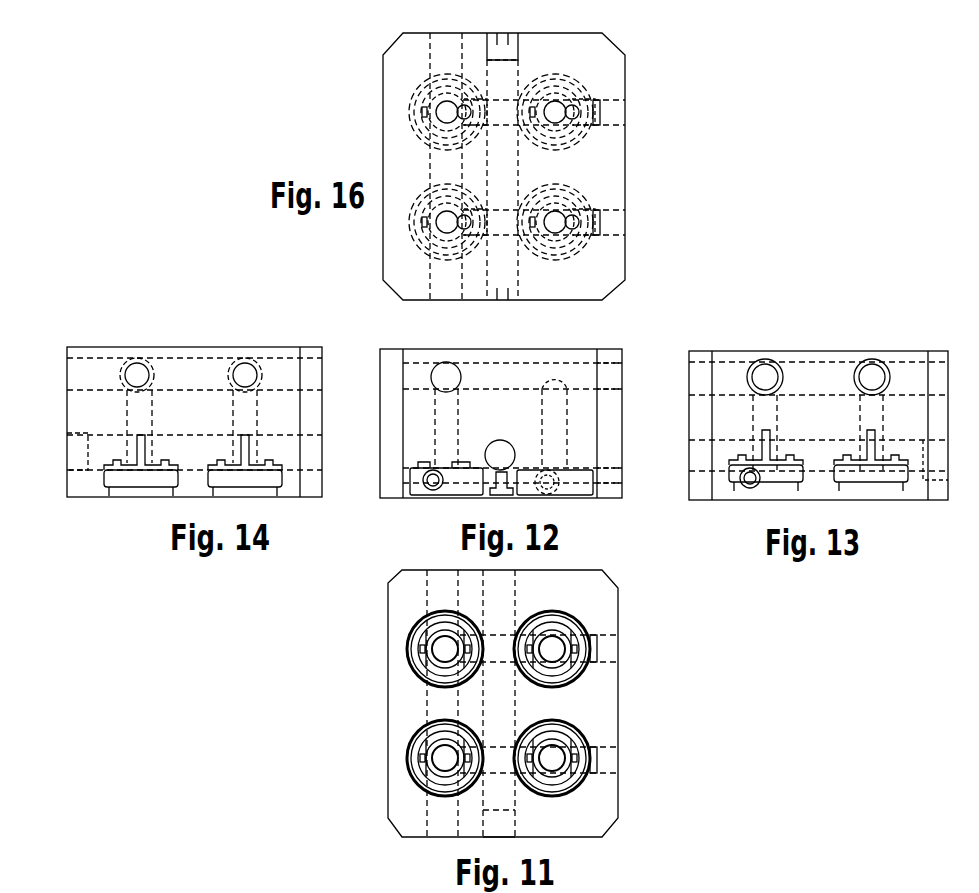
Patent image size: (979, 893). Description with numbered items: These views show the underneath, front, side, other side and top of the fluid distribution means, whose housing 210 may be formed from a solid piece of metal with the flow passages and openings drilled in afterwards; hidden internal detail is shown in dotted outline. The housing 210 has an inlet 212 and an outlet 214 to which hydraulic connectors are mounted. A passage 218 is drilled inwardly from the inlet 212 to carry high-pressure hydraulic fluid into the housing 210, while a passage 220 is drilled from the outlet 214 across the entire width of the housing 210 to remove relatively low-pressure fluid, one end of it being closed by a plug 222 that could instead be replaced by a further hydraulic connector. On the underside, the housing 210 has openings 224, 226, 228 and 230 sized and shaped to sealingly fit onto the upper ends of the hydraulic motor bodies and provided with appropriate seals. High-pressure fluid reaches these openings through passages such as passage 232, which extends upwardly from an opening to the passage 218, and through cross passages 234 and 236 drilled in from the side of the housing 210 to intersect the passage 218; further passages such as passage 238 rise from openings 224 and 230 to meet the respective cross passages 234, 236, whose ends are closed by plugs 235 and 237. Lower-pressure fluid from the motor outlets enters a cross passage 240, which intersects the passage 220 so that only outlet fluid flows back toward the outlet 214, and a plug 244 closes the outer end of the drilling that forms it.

In FIG. 16, the housing 210 is at (640, 165).
In FIG. 11, the housing 210 is at (622, 700).
In FIG. 14, the housing 210 is at (88, 352).
In FIG. 16, the inlet 212 is at (442, 273).
In FIG. 11, the inlet 212 is at (442, 587).
In FIG. 12, the inlet 212 is at (440, 378).
In FIG. 16, the outlet 214 is at (508, 288).
In FIG. 12, the outlet 214 is at (494, 450).
In FIG. 16, the passage 218 is at (442, 162).
In FIG. 11, the passage 218 is at (427, 708).
In FIG. 14, the passage 218 is at (215, 370).
In FIG. 13, the passage 218 is at (807, 373).
In FIG. 14, the passage 220 is at (192, 443).
In FIG. 13, the passage 220 is at (840, 440).
In FIG. 16, the plug 222 is at (507, 47).
In FIG. 11, the plug 222 is at (490, 822).
In FIG. 14, the plug 222 is at (78, 455).
In FIG. 11, the opening 224 is at (573, 607).
In FIG. 11, the opening 226 is at (417, 627).
In FIG. 11, the opening 228 is at (415, 768).
In FIG. 11, the opening 230 is at (552, 798).
In FIG. 12, the passage 232 is at (445, 440).
In FIG. 16, the cross passage 234 is at (508, 235).
In FIG. 11, the cross passage 234 is at (499, 703).
In FIG. 12, the cross passage 234 is at (582, 375).
In FIG. 16, the plug 235 is at (613, 222).
In FIG. 11, the plug 235 is at (608, 762).
In FIG. 16, the cross passage 236 is at (500, 77).
In FIG. 16, the plug 237 is at (613, 115).
In FIG. 11, the plug 237 is at (608, 650).
In FIG. 12, the passage 238 is at (570, 427).
In FIG. 12, the cross passage 240 is at (535, 412).
In FIG. 12, the plug 244 is at (605, 480).